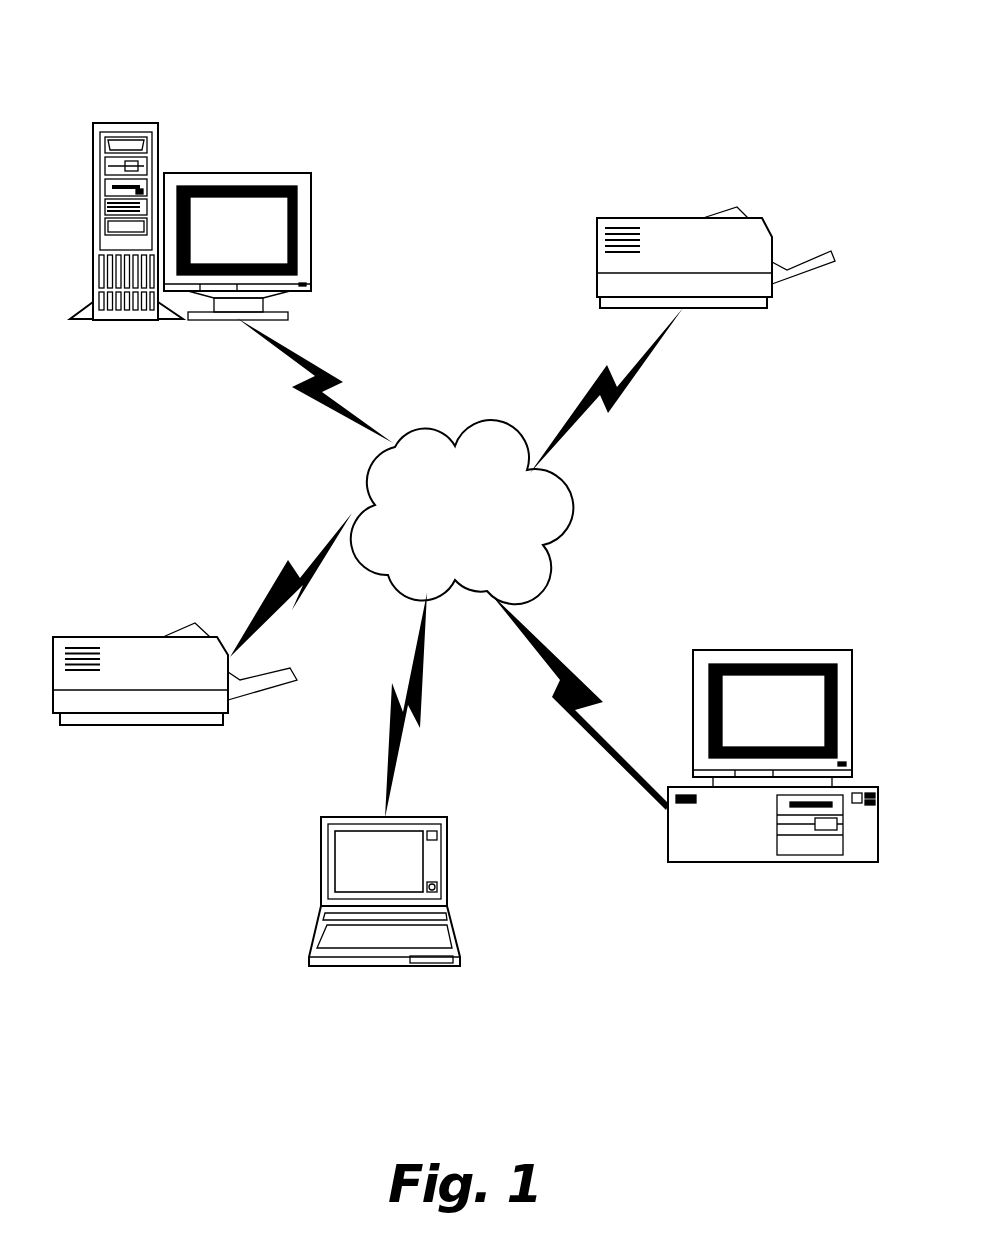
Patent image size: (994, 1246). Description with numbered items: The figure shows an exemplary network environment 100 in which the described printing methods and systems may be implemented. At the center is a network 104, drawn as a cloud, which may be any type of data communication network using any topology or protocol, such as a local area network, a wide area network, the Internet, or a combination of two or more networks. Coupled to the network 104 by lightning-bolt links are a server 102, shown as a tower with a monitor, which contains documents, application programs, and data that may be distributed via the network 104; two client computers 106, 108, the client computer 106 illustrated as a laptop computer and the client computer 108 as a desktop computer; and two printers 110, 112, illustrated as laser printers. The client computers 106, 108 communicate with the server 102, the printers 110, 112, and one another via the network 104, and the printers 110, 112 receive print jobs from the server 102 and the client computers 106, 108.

The network environment 100 is at (490, 50).
The server 102 is at (120, 123).
The network 104 is at (487, 430).
The client computer 106 is at (321, 892).
The client computer 108 is at (773, 650).
The printer 110 is at (597, 260).
The printer 112 is at (140, 637).